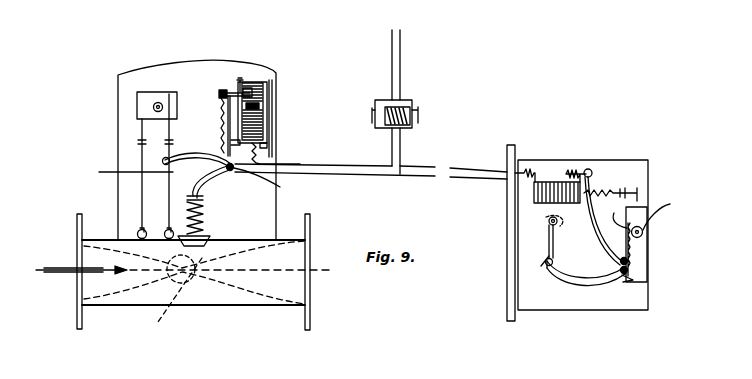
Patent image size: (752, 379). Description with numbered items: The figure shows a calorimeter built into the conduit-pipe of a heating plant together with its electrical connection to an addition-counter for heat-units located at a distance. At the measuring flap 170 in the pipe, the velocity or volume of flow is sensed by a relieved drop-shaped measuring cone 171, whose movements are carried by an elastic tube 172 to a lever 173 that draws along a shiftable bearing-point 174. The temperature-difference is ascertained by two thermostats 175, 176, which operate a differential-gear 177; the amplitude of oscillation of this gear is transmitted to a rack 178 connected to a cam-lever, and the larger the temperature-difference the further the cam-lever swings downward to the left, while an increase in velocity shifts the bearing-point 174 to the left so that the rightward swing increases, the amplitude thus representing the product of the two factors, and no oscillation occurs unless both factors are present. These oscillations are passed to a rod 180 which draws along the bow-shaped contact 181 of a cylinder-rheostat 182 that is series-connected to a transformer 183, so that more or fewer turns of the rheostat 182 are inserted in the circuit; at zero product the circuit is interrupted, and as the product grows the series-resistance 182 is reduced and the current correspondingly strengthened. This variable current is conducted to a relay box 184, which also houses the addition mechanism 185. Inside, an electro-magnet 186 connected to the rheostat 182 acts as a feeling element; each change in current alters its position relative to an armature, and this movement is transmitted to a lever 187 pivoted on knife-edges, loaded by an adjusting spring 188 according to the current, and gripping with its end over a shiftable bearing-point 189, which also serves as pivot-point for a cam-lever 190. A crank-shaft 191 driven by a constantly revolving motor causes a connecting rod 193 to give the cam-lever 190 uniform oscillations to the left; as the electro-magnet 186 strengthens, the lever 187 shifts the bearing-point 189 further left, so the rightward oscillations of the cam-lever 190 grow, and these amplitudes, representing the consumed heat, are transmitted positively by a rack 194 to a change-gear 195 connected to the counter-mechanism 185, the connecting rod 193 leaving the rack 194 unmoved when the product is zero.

The measuring flap 170 is at (190, 300).
The measuring cone 171 is at (171, 301).
The elastic tube 172 is at (208, 212).
The lever 173 is at (204, 188).
The shiftable bearing-point 174 is at (272, 183).
The thermostat 175 is at (140, 198).
The thermostat 176 is at (122, 171).
The differential-gear 177 is at (175, 95).
The rack 178 is at (177, 121).
The rod 180 is at (263, 130).
The bow-shaped contact 181 is at (233, 91).
The cylinder-rheostat 182 is at (262, 102).
The transformer 183 is at (386, 108).
The relay box 184 is at (633, 298).
The addition mechanism 185 is at (637, 247).
The electro-magnet 186 is at (559, 182).
The lever 187 is at (594, 236).
The adjusting spring 188 is at (609, 191).
The shiftable bearing-point 189 is at (642, 268).
The cam-lever 190 is at (572, 280).
The crank-shaft 191 is at (549, 224).
The connecting rod 193 is at (548, 252).
The rack 194 is at (609, 213).
The change-gear 195 is at (663, 209).